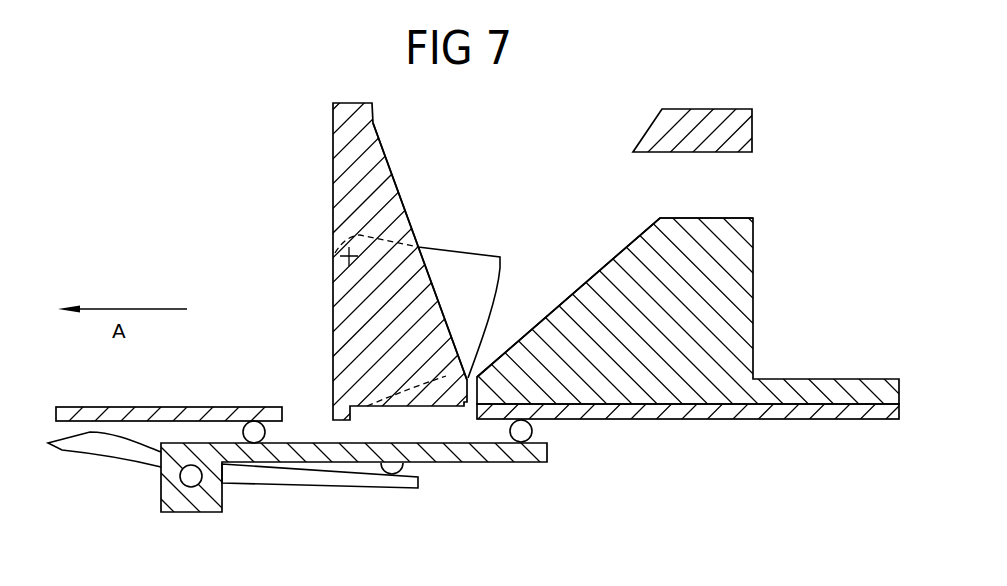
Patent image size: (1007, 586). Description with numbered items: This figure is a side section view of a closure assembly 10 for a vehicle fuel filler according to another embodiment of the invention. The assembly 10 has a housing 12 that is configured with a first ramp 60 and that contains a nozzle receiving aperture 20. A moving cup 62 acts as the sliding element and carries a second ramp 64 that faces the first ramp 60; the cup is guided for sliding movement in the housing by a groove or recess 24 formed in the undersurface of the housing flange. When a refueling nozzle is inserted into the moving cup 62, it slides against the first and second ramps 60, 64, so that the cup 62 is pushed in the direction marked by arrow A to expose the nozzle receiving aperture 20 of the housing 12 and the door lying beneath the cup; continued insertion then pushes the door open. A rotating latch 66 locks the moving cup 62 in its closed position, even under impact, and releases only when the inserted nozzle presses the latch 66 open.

The closure assembly 10 is at (267, 156).
The housing 12 is at (753, 306).
The nozzle receiving aperture 20 is at (473, 368).
The groove or recess 24 is at (538, 450).
The first ramp 60 is at (633, 240).
The moving cup 62 is at (333, 203).
The second ramp 64 is at (384, 152).
The latch 66 is at (443, 245).